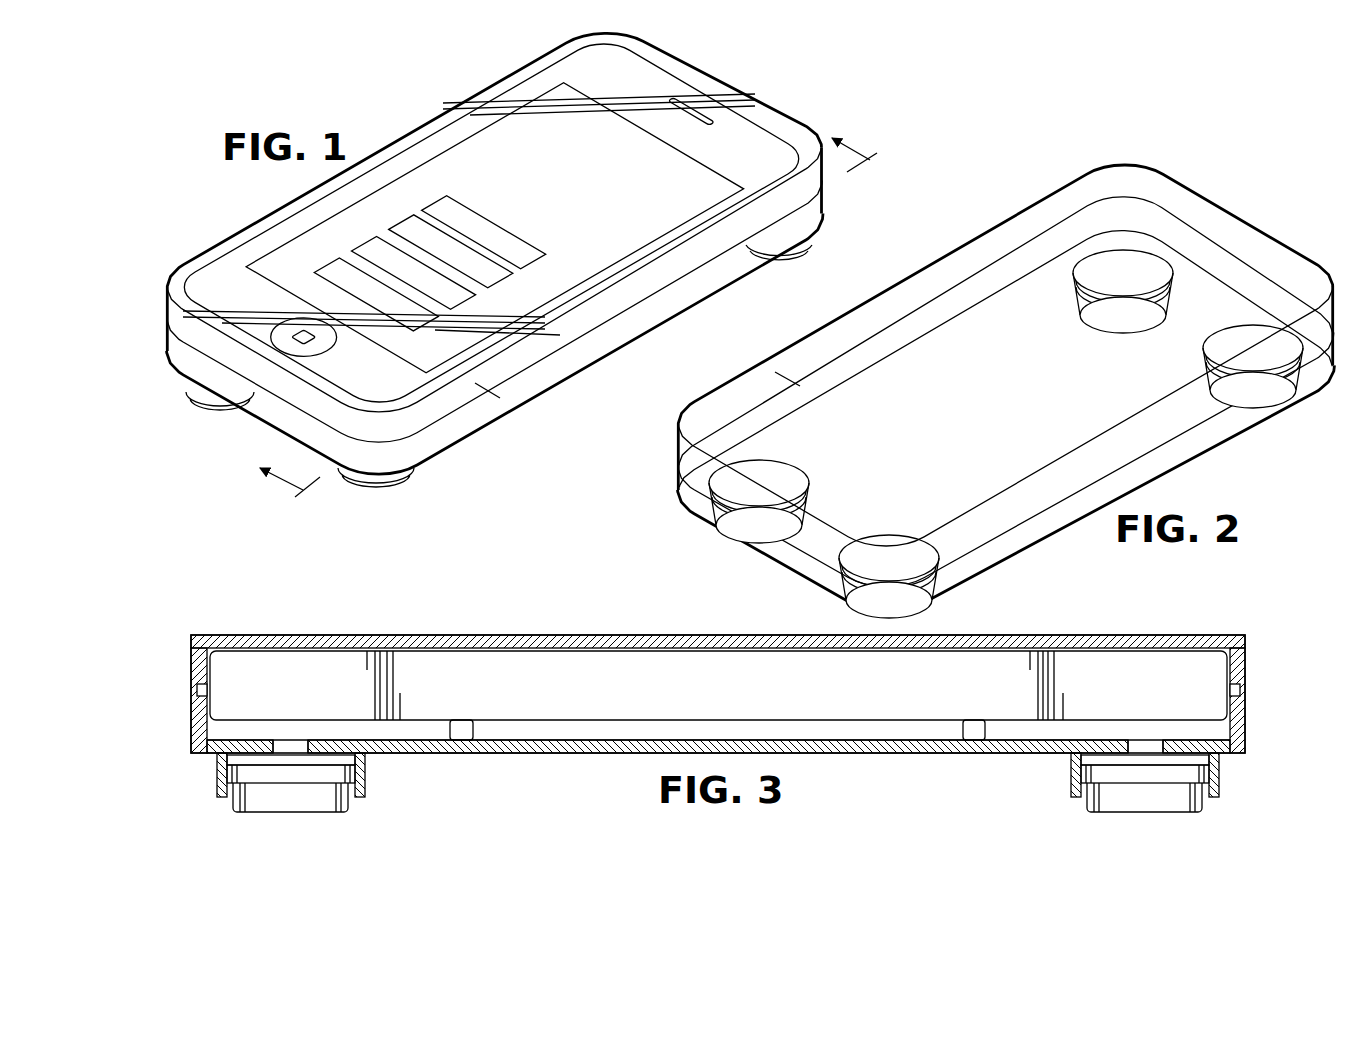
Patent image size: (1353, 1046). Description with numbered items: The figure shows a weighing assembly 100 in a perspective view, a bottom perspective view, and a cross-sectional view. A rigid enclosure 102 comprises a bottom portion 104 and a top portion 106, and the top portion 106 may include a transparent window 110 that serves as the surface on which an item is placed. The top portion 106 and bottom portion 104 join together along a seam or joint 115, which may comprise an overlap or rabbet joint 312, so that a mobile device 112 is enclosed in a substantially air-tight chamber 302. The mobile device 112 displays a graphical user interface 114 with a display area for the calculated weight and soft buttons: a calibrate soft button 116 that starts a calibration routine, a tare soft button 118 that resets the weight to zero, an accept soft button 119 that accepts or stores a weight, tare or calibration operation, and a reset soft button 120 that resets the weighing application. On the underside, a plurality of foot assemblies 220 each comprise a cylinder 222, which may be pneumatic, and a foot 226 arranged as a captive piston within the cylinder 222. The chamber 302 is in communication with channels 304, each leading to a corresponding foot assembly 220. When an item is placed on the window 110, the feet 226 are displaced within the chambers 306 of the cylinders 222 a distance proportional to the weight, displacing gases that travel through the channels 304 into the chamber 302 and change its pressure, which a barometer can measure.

In FIG. 1, the weighing assembly 100 is at (416, 100).
In FIG. 2, the weighing assembly 100 is at (968, 221).
In FIG. 3, the weighing assembly 100 is at (539, 620).
In FIG. 1, the rigid enclosure 102 is at (170, 270).
In FIG. 2, the rigid enclosure 102 is at (690, 408).
In FIG. 3, the rigid enclosure 102 is at (190, 634).
In FIG. 1, the bottom portion 104 is at (167, 343).
In FIG. 2, the bottom portion 104 is at (678, 470).
In FIG. 3, the bottom portion 104 is at (193, 735).
In FIG. 1, the top portion 106 is at (167, 307).
In FIG. 2, the top portion 106 is at (678, 433).
In FIG. 3, the top portion 106 is at (193, 660).
In FIG. 1, the transparent window 110 is at (766, 150).
In FIG. 3, the transparent window 110 is at (297, 635).
In FIG. 1, the mobile device 112 is at (222, 260).
In FIG. 3, the mobile device 112 is at (700, 695).
In FIG. 1, the graphical user interface 114 is at (273, 233).
In FIG. 1, the seam or joint 115 is at (495, 395).
In FIG. 2, the seam or joint 115 is at (790, 378).
In FIG. 1, the calibrate soft button 116 is at (328, 268).
In FIG. 1, the tare soft button 118 is at (372, 240).
In FIG. 1, the accept soft button 119 is at (410, 216).
In FIG. 1, the reset soft button 120 is at (445, 198).
In FIG. 1, the foot assembly 220 is at (220, 414).
In FIG. 2, the foot assembly 220 is at (1120, 336).
In FIG. 3, the foot assembly 220 is at (278, 813).
In FIG. 2, the cylinder 222 is at (1076, 296).
In FIG. 3, the cylinder 222 is at (217, 778).
In FIG. 2, the foot 226 is at (1107, 318).
In FIG. 3, the foot 226 is at (350, 810).
In FIG. 3, the chamber 302 is at (560, 735).
In FIG. 3, the channels 304 is at (292, 744).
In FIG. 3, the chamber of cylinder 306 is at (328, 764).
In FIG. 3, the rabbet joint 312 is at (195, 689).